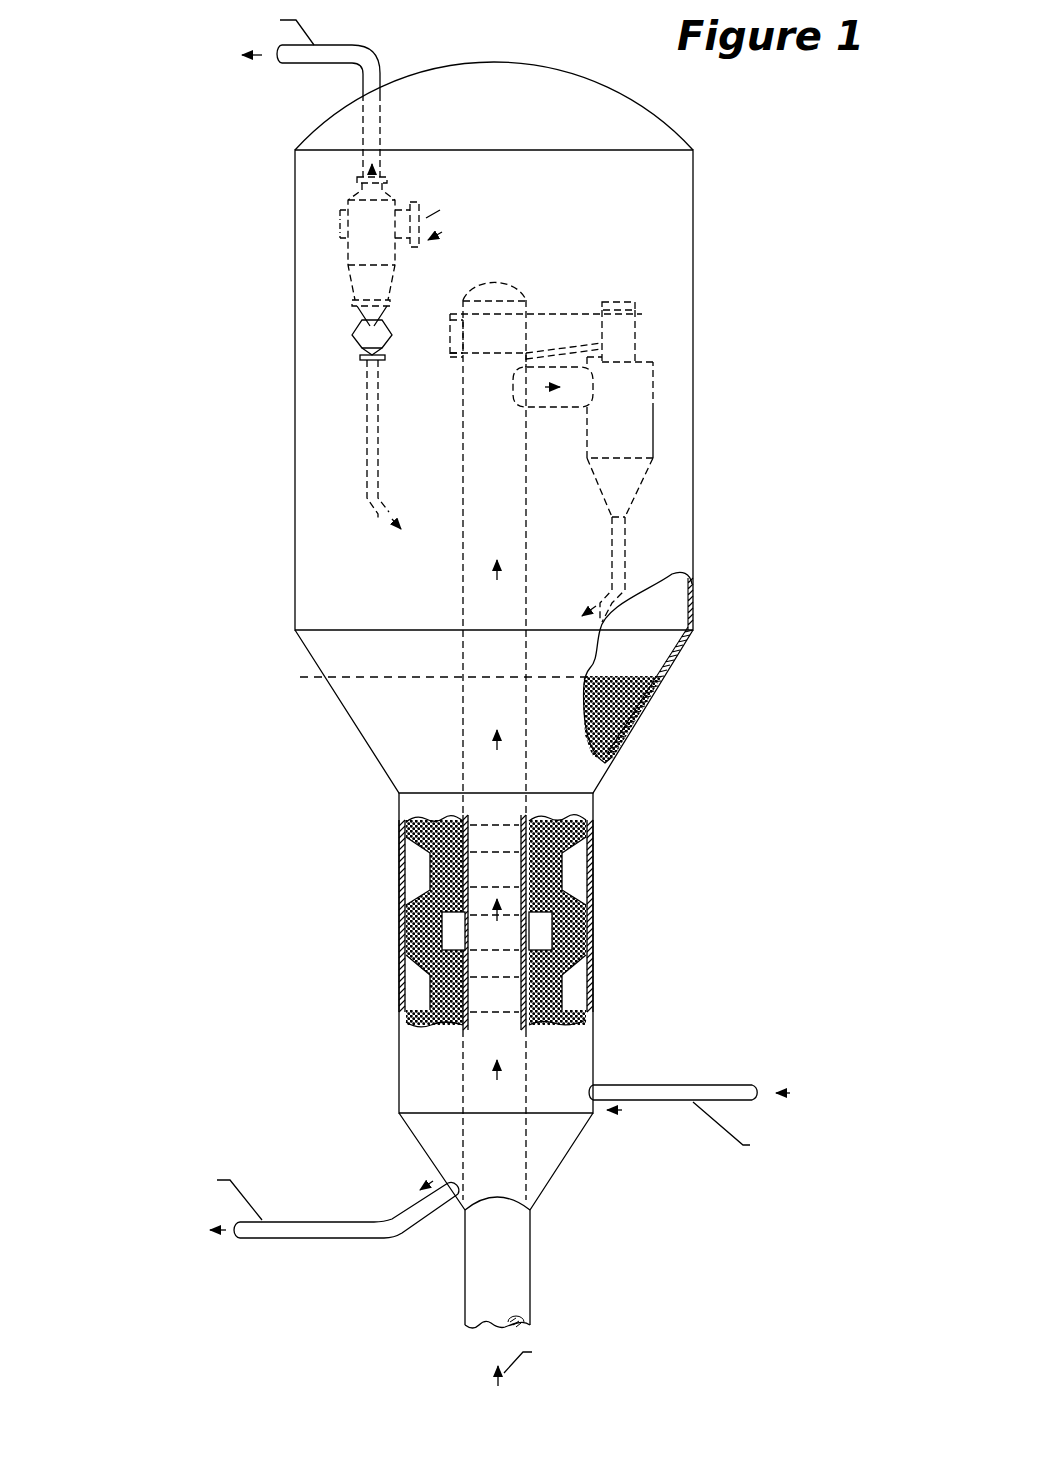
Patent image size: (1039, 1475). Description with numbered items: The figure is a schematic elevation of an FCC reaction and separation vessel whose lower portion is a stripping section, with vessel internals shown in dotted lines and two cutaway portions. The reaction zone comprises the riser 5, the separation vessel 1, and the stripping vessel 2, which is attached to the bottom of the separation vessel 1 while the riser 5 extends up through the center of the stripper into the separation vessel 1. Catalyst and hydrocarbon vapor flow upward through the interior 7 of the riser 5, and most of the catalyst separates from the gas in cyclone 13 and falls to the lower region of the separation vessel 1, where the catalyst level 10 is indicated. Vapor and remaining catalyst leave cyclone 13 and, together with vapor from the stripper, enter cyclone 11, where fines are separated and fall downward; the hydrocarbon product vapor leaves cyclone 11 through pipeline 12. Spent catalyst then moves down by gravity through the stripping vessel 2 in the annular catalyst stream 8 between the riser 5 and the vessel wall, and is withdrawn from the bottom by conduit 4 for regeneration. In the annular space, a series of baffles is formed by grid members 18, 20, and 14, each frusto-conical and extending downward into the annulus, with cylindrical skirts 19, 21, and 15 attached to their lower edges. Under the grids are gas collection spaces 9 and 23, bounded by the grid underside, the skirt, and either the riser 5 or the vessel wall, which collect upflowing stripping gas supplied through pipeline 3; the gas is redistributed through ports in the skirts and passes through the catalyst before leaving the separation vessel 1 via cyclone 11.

The separation vessel 1 is at (699, 283).
The stripping vessel 2 is at (397, 1056).
The pipeline 3 is at (648, 1083).
The conduit 4 is at (296, 1238).
The riser 5 is at (493, 285).
The interior of riser 7 is at (501, 882).
The catalyst stream 8 is at (424, 930).
The gas collection space 9 is at (460, 948).
The catalyst level 10 is at (609, 675).
The cyclone 11 is at (399, 203).
The pipeline 12 is at (331, 67).
The cyclone 13 is at (599, 479).
The grid member 14 is at (567, 967).
The skirt 15 is at (567, 987).
The grid member 18 is at (412, 841).
The skirt 19 is at (429, 864).
The grid member 20 is at (544, 900).
The skirt 21 is at (554, 927).
The gas collection space 23 is at (420, 987).